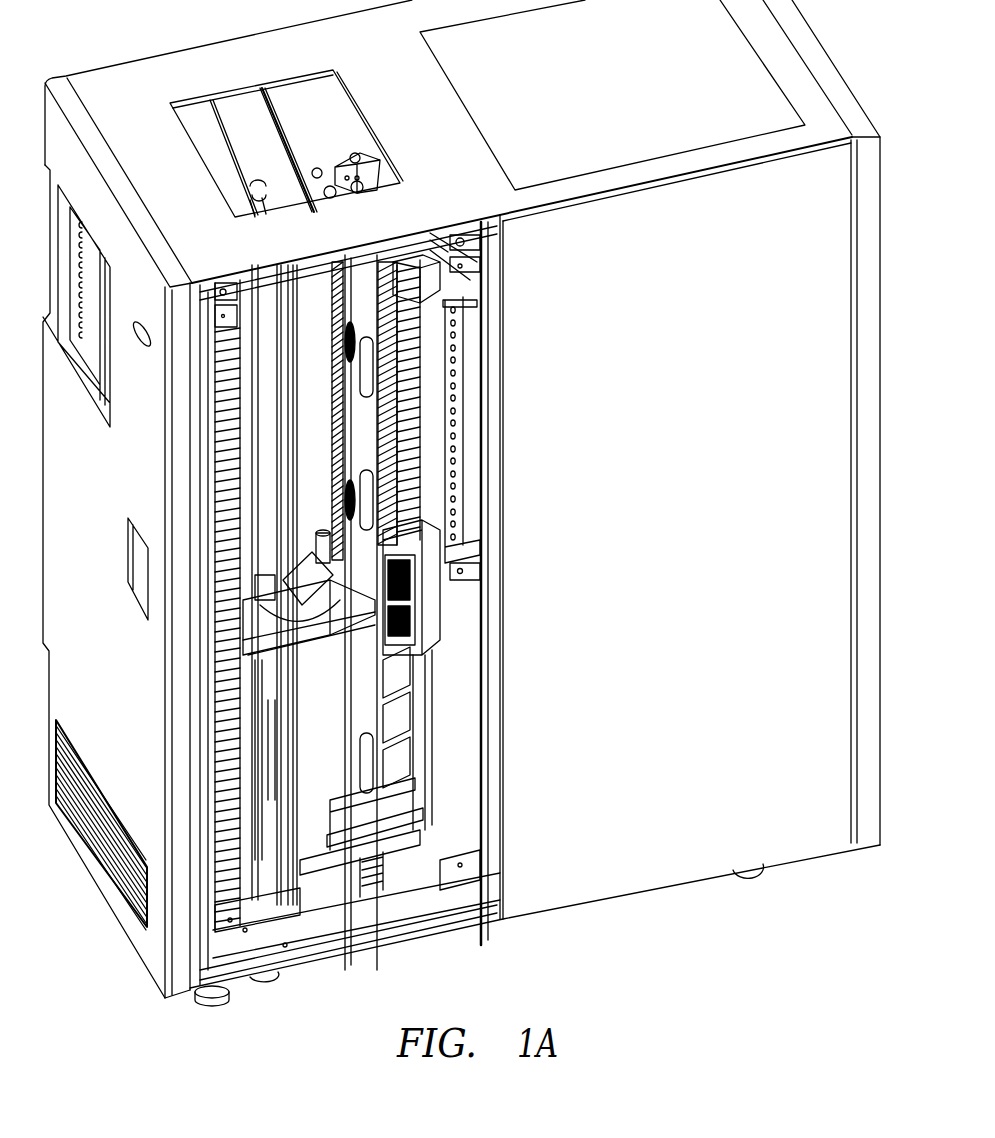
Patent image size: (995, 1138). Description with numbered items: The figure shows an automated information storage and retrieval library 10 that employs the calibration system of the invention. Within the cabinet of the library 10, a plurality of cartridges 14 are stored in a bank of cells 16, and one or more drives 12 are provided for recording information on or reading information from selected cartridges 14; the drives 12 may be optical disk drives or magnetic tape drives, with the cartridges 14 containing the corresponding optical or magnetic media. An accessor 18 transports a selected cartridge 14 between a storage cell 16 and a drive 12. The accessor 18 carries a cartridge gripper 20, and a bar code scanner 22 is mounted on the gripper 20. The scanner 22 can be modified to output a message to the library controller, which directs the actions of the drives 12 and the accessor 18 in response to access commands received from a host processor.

The automated information storage and retrieval library 10 is at (238, 57).
The drive 12 is at (422, 630).
The cartridge 14 is at (213, 412).
The cell 16 is at (373, 440).
The accessor 18 is at (252, 877).
The cartridge gripper 20 is at (411, 638).
The bar code scanner 22 is at (270, 555).